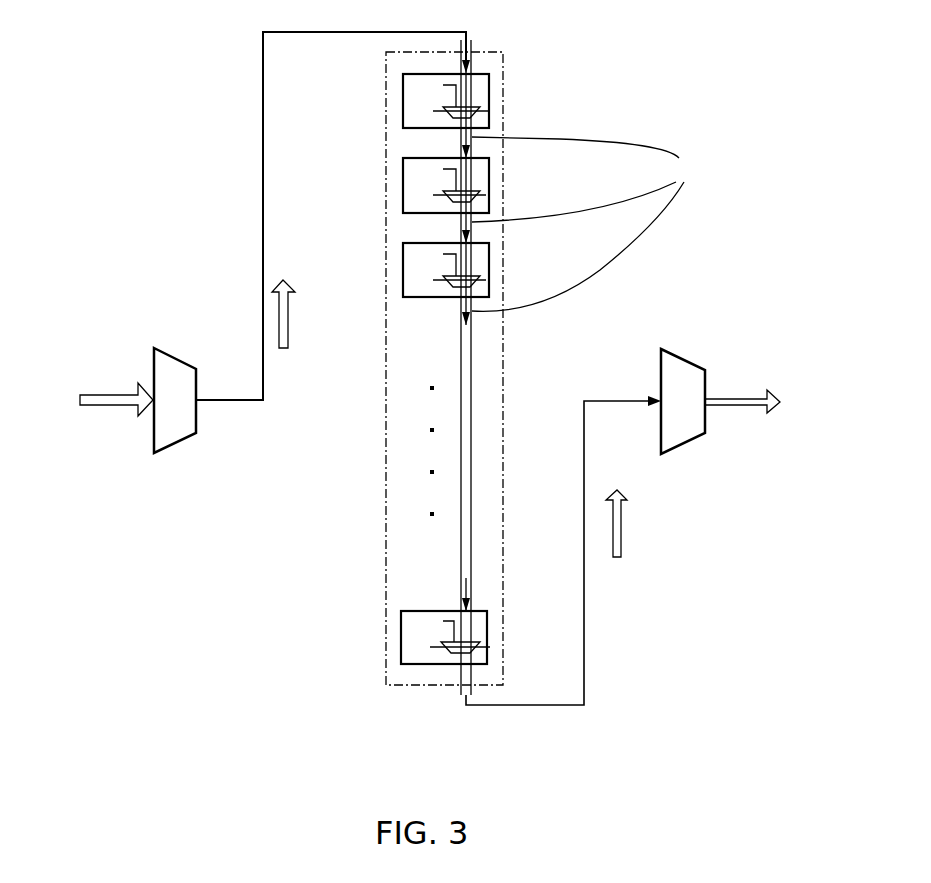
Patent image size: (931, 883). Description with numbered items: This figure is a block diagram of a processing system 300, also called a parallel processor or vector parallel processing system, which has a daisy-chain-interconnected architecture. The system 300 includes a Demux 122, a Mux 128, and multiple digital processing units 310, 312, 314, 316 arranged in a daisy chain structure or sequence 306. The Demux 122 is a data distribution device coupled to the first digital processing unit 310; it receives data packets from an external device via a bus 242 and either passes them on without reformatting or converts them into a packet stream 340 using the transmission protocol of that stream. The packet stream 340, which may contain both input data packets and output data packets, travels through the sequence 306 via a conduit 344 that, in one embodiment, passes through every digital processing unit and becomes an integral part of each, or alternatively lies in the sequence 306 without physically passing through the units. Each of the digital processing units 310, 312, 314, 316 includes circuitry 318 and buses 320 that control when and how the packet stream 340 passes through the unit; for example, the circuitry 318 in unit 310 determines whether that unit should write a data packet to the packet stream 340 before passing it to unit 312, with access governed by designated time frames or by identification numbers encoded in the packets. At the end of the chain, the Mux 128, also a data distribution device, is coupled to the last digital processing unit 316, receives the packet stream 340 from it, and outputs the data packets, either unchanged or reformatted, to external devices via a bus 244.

The processing system 300 is at (766, 62).
The sequence 306 is at (505, 82).
The digital processing unit 310 is at (476, 95).
The digital processing unit 312 is at (403, 188).
The digital processing unit 314 is at (403, 270).
The digital processing unit 316 is at (490, 648).
The circuitry 318 is at (495, 110).
The buses 320 is at (585, 224).
The conduit 344 is at (459, 558).
The Demux 122 is at (175, 350).
The Mux 128 is at (683, 387).
The bus 242 is at (107, 397).
The bus 244 is at (760, 409).
The packet stream 340 is at (287, 318).